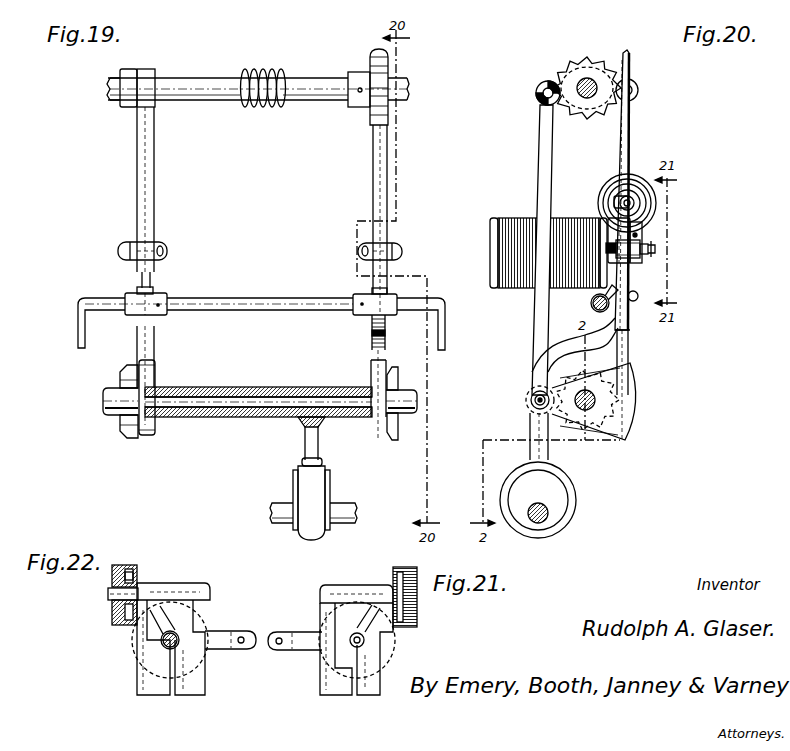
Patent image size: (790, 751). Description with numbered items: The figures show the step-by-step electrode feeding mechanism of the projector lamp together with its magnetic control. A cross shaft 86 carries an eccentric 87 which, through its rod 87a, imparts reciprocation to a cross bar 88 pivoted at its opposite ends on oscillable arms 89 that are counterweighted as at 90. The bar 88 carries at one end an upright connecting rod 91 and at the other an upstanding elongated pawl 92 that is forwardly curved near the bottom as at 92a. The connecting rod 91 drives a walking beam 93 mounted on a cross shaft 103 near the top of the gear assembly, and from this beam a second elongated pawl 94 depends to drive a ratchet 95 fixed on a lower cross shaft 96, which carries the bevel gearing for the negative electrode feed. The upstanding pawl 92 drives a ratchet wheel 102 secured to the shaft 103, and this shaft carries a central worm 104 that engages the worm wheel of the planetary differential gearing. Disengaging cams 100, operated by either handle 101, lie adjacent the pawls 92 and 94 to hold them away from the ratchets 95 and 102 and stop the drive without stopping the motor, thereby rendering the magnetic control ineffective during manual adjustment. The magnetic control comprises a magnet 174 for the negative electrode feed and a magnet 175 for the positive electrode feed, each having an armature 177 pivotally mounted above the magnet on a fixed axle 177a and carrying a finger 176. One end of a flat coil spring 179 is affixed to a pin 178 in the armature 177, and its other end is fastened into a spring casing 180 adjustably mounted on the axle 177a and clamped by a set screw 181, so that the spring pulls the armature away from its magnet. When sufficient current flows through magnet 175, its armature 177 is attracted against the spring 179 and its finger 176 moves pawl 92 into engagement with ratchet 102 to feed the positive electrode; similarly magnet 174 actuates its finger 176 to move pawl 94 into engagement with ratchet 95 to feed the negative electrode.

In FIG. 19, the cross shaft 86 is at (280, 503).
In FIG. 20, the cross shaft 86 is at (550, 513).
In FIG. 19, the eccentric 87 is at (327, 483).
In FIG. 20, the eccentric 87 is at (558, 488).
In FIG. 19, the eccentric rod 87a is at (305, 441).
In FIG. 20, the eccentric rod 87a is at (548, 450).
In FIG. 19, the cross bar 88 is at (215, 402).
In FIG. 20, the cross bar 88 is at (530, 400).
In FIG. 19, the oscillable arms 89 is at (128, 403).
In FIG. 20, the oscillable arms 89 is at (538, 388).
In FIG. 19, the counterweight 90 is at (130, 432).
In FIG. 20, the counterweight 90 is at (636, 398).
In FIG. 19, the upright connecting rod 91 is at (145, 170).
In FIG. 20, the upright connecting rod 91 is at (535, 325).
In FIG. 19, the elongated pawl 92 is at (375, 143).
In FIG. 20, the elongated pawl 92 is at (628, 127).
In FIG. 19, the forwardly curved portion of pawl 92a is at (372, 341).
In FIG. 20, the forwardly curved portion of pawl 92a is at (537, 343).
In FIG. 19, the walking beam 93 is at (125, 103).
In FIG. 20, the walking beam 93 is at (556, 82).
In FIG. 19, the second elongated pawl 94 is at (150, 282).
In FIG. 20, the second elongated pawl 94 is at (630, 347).
In FIG. 19, the ratchet 95 is at (157, 423).
In FIG. 20, the ratchet 95 is at (594, 426).
In FIG. 20, the cross shaft 96 is at (578, 418).
In FIG. 19, the disengaging cams 100 is at (160, 313).
In FIG. 20, the disengaging cams 100 is at (593, 300).
In FIG. 19, the handle 101 is at (79, 334).
In FIG. 19, the ratchet wheel 102 is at (390, 69).
In FIG. 20, the ratchet wheel 102 is at (572, 62).
In FIG. 19, the cross shaft 103 is at (312, 78).
In FIG. 20, the cross shaft 103 is at (588, 80).
In FIG. 19, the worm 104 is at (268, 70).
In FIG. 20, the magnet 174 is at (515, 218).
In FIG. 21, the magnet 174 is at (329, 655).
In FIG. 22, the magnet 175 is at (203, 651).
In FIG. 19, the finger 176 is at (162, 250).
In FIG. 20, the finger 176 is at (653, 259).
In FIG. 22, the finger 176 is at (238, 636).
In FIG. 21, the finger 176 is at (290, 637).
In FIG. 20, the armature 177 is at (653, 241).
In FIG. 22, the armature 177 is at (165, 643).
In FIG. 21, the armature 177 is at (367, 643).
In FIG. 20, the fixed axle 177a is at (650, 197).
In FIG. 22, the fixed axle 177a is at (110, 596).
In FIG. 22, the pin 178 is at (127, 626).
In FIG. 20, the flat coil spring 179 is at (657, 202).
In FIG. 22, the flat coil spring 179 is at (136, 579).
In FIG. 20, the spring casing 180 is at (605, 198).
In FIG. 21, the spring casing 180 is at (397, 574).
In FIG. 22, the set screw 181 is at (120, 569).